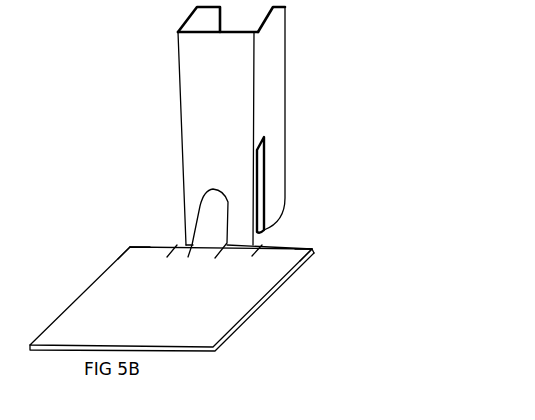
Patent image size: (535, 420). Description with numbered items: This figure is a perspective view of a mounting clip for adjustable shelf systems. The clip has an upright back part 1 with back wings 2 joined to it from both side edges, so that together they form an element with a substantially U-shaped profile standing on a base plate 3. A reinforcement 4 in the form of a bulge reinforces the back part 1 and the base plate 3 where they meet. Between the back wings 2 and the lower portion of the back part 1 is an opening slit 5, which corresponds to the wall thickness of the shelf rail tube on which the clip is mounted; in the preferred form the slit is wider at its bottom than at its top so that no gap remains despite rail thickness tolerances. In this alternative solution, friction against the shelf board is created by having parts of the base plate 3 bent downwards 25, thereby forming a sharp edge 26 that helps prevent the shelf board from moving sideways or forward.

The back part 1 is at (227, 67).
The back wings 2 is at (262, 100).
The base plate 3 is at (213, 303).
The reinforcement 4 is at (205, 236).
The opening slits 5 is at (258, 190).
The parts of the base plate bent downwards 25 is at (138, 247).
The sharp edge 26 is at (312, 250).